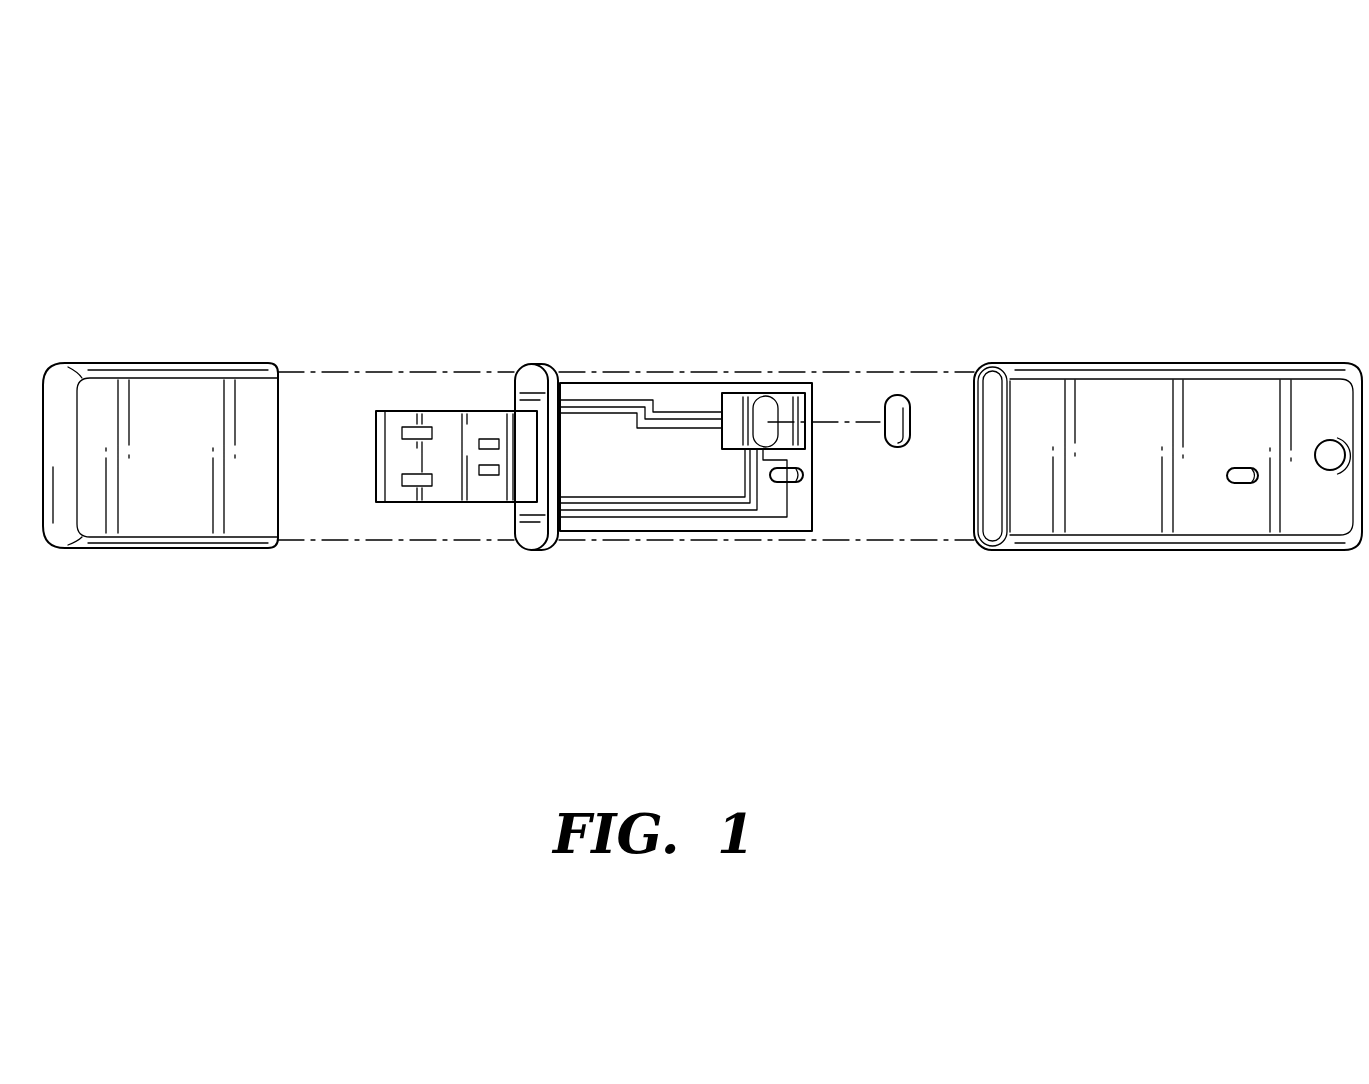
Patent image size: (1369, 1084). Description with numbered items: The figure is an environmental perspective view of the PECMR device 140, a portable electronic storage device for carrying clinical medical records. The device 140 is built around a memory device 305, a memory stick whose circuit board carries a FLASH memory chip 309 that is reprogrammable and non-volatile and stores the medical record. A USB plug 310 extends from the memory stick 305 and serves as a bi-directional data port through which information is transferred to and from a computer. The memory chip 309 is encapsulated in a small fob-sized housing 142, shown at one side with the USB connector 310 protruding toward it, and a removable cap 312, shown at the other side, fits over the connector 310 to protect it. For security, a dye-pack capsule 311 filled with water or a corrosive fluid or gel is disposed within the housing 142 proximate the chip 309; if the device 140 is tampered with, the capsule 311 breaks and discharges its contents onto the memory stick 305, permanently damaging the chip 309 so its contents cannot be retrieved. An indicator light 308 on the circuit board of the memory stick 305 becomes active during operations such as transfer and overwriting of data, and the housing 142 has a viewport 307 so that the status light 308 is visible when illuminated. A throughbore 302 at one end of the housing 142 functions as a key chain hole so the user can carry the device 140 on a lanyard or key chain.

The PECMR device 140 is at (1146, 207).
The removable cap 312 is at (200, 363).
The USB plug 310 is at (396, 520).
The memory device 305 is at (702, 576).
The FLASH memory chip 309 is at (747, 393).
The dye-pack capsule 311 is at (778, 405).
The indicator light 308 is at (800, 484).
The housing 142 is at (1247, 363).
The viewport 307 is at (1232, 484).
The throughbore 302 is at (1328, 471).